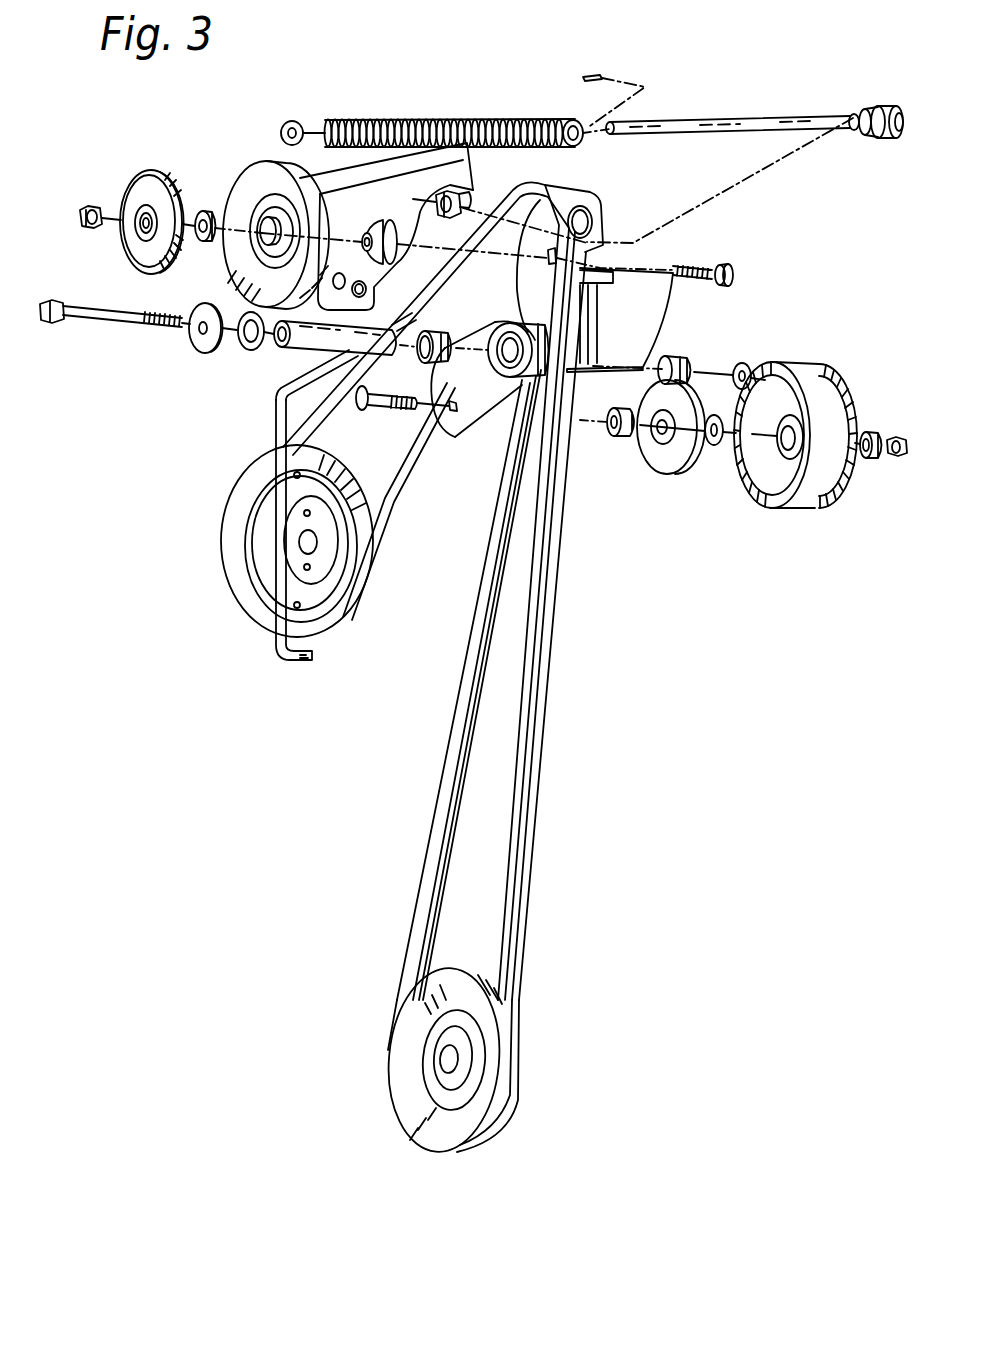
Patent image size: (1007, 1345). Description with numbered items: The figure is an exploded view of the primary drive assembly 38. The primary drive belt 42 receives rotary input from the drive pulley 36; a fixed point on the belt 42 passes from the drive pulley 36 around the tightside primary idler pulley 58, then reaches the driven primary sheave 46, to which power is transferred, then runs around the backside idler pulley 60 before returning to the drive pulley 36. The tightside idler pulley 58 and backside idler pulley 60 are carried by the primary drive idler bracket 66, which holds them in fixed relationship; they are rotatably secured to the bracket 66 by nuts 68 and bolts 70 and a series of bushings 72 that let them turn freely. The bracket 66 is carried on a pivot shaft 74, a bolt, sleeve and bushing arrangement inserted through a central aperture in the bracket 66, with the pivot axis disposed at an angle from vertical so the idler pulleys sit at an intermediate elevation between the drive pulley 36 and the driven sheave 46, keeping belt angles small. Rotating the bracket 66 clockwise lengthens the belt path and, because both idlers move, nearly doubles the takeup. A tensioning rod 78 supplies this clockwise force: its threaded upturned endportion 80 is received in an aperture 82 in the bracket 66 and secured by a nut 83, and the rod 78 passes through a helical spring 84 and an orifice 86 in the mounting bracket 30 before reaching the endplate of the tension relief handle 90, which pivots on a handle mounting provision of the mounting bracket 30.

The mounting bracket 30 is at (392, 215).
The drive pulley 36 is at (402, 1092).
The primary drive assembly 38 is at (660, 600).
The primary drive belt 42 is at (548, 670).
The driven primary sheave 46 is at (230, 508).
The tightside primary idler pulley 58 is at (248, 178).
The backside idler pulley 60 is at (773, 512).
The primary drive idler bracket 66 is at (455, 440).
The nuts 68 is at (89, 210).
The bolts 70 is at (736, 273).
The bushings 72 is at (205, 211).
The pivot shaft 74 is at (270, 348).
The tensioning rod 78 is at (763, 118).
The threaded upturned endportion 80 is at (856, 114).
The aperture 82 is at (588, 230).
The nut 83 is at (463, 205).
The helical spring 84 is at (480, 120).
The orifice 86 is at (392, 252).
The tension relief handle 90 is at (274, 406).